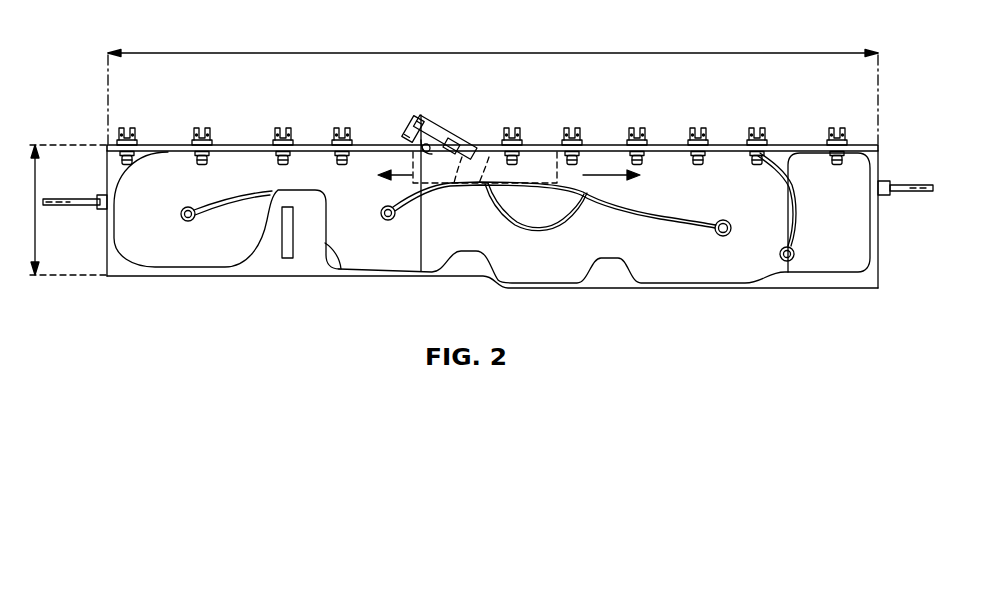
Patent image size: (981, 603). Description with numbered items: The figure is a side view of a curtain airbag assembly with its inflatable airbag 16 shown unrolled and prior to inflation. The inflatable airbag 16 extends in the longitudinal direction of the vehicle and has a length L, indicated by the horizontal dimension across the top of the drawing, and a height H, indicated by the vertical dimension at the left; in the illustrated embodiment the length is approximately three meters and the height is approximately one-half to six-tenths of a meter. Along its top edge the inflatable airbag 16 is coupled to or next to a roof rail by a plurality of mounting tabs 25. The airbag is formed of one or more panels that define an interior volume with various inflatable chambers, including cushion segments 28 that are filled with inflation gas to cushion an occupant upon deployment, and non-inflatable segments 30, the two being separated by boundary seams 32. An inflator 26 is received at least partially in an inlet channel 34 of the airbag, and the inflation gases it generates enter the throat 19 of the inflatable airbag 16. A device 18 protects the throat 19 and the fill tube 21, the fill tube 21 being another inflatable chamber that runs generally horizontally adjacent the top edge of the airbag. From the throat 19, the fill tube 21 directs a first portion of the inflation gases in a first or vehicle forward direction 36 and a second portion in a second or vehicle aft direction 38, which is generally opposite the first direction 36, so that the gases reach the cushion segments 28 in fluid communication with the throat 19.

The inflatable airbag 16 is at (234, 279).
The device for protecting the throat and fill tube 18 is at (557, 177).
The throat 19 is at (510, 173).
The fill tube 21 is at (553, 172).
The mounting tabs 25 is at (132, 128).
The inflator 26 is at (408, 120).
The cushion segments 28 is at (125, 240).
The non-inflatable segments 30 is at (302, 253).
The boundary seams 32 is at (341, 269).
The inlet channel 34 is at (448, 118).
The first or vehicle forward direction 36 is at (405, 178).
The second or vehicle aft direction 38 is at (618, 177).
The length L is at (512, 53).
The height H is at (34, 222).